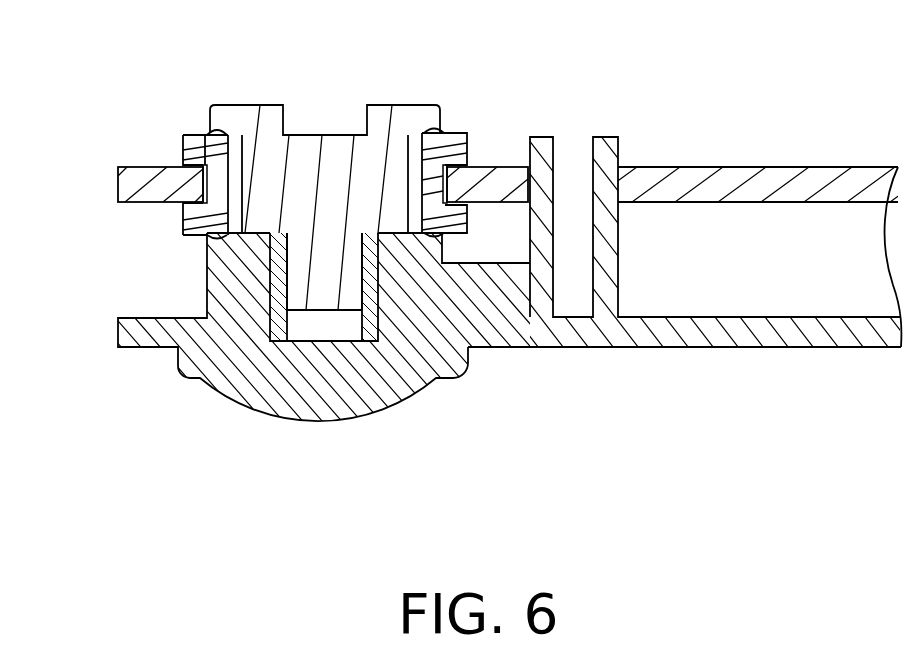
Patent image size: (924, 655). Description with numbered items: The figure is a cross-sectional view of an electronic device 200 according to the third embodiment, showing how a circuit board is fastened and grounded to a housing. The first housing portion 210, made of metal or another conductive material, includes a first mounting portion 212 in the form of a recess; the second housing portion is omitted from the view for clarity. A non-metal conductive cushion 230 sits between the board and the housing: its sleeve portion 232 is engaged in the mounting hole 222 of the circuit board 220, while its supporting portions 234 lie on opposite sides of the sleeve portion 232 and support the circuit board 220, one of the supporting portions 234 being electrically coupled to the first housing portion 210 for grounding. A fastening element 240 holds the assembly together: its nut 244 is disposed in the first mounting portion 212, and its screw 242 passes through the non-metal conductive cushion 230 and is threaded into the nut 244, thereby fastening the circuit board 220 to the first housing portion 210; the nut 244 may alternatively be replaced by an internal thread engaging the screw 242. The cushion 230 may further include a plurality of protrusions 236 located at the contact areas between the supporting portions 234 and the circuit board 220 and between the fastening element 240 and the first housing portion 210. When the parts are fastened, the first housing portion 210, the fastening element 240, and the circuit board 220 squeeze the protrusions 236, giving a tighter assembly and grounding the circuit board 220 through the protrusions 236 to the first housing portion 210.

The electronic device 200 is at (790, 551).
The first housing portion 210 is at (525, 322).
The first mounting portion 212 is at (347, 330).
The circuit board 220 is at (138, 195).
The mounting hole 222 is at (210, 183).
The non-metal conductive cushion 230 is at (528, 131).
The sleeve portion 232 is at (436, 177).
The supporting portions 234 is at (453, 152).
The protrusions 236 is at (213, 128).
The fastening element 240 is at (321, 344).
The screw 242 is at (327, 293).
The nut 244 is at (283, 293).